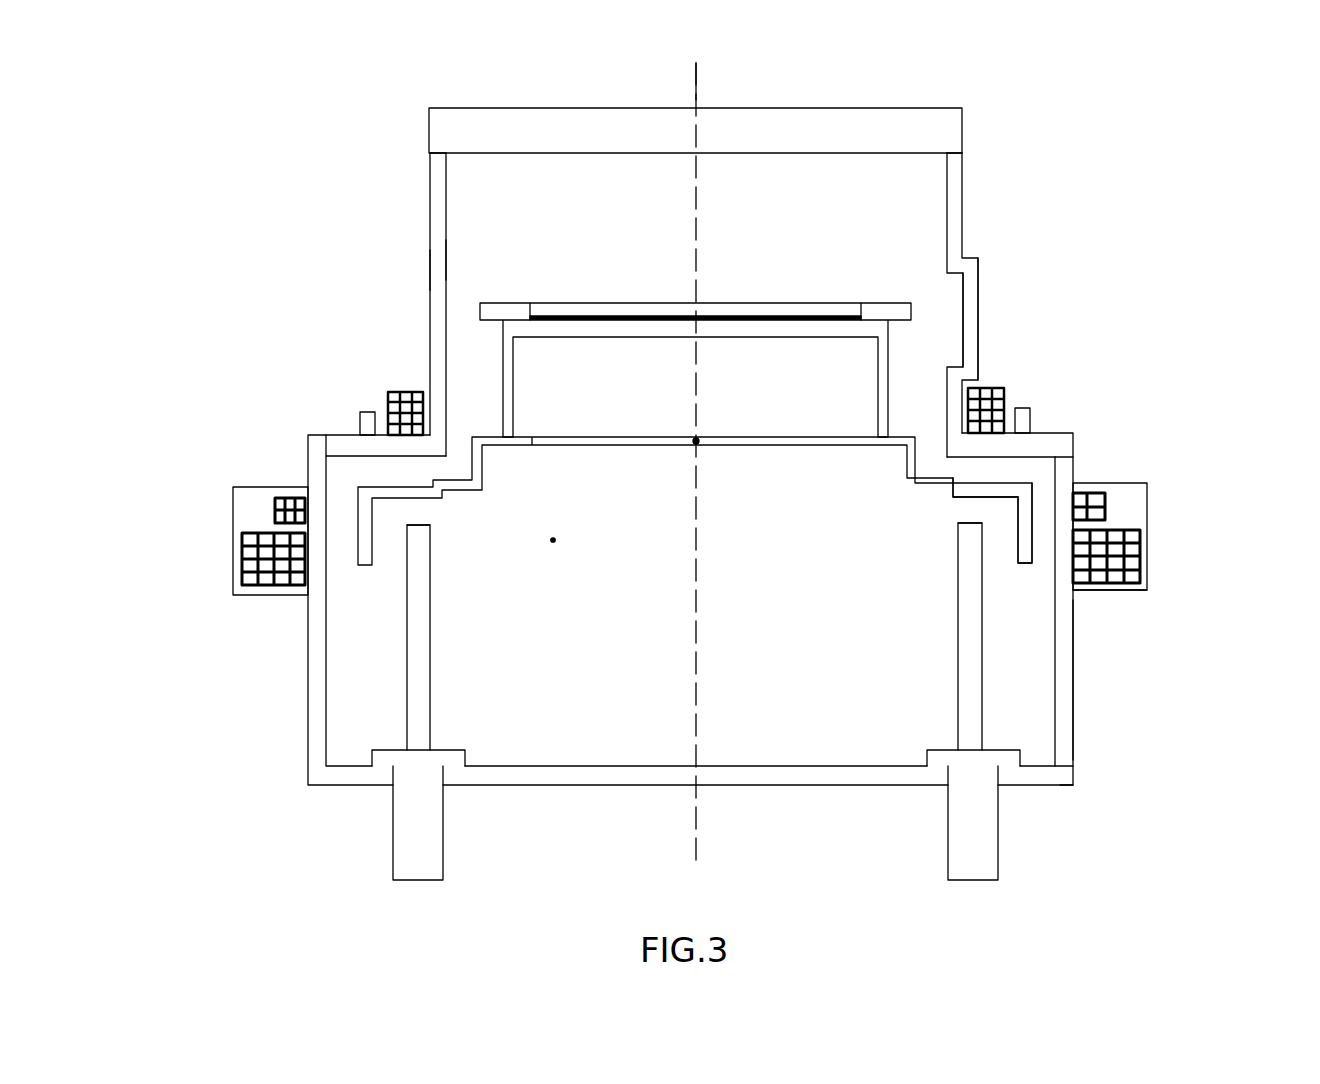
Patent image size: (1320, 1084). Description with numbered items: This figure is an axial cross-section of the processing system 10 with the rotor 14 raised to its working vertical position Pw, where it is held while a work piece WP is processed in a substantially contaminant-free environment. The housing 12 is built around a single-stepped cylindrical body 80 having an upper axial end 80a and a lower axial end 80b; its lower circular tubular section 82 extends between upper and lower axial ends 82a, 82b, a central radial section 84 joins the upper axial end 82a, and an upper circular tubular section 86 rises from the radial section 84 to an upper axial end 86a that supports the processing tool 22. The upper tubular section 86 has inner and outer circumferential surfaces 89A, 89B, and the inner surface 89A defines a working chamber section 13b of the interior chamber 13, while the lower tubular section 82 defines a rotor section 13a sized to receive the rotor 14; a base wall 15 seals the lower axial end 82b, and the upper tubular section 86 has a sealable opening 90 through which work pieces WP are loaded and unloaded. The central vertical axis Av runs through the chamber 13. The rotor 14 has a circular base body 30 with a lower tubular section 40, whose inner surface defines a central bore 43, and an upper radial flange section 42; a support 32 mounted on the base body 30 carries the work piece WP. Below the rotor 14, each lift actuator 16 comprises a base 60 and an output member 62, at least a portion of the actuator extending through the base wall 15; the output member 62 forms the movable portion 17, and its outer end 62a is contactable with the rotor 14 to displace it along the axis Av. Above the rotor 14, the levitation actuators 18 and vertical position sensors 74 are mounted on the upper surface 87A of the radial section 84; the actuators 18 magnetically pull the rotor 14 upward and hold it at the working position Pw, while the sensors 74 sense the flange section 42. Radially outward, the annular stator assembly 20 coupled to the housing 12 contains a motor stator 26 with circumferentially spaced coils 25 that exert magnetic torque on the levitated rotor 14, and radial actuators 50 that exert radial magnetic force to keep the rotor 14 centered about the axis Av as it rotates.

The processing system 10 is at (310, 194).
The housing 12 is at (1005, 192).
The interior chamber 13 is at (463, 203).
The rotor section 13a is at (762, 740).
The working chamber section 13b is at (925, 242).
The rotor 14 is at (348, 578).
The base wall 15 is at (812, 787).
The lift actuator 16 is at (370, 842).
The movable portion 17 is at (434, 648).
The levitation actuator 18 is at (386, 380).
The annular stator assembly 20 is at (1180, 557).
The processing tool 22 is at (878, 106).
The coils 25 is at (245, 560).
The motor stator 26 is at (1117, 594).
The circular base body 30 is at (358, 480).
The support 32 is at (755, 338).
The tubular section 40 is at (1022, 557).
The radial flange section 42 is at (985, 490).
The central bore 43 is at (553, 543).
The radial actuator 50 is at (285, 497).
The base 60 is at (430, 836).
The output member 62 is at (422, 692).
The outer end 62a is at (420, 516).
The vertical position sensor 74 is at (366, 410).
The cylindrical body 80 is at (965, 178).
The upper axial end 80a is at (962, 152).
The lower axial end 80b is at (1073, 783).
The lower circular tubular section 82 is at (1073, 706).
The upper axial end 82a is at (1068, 457).
The lower axial end 82b is at (1062, 762).
The central radial section 84 is at (1052, 437).
The upper circular tubular section 86 is at (427, 238).
The upper axial end 86a is at (440, 160).
The upper surface 87A is at (338, 433).
The inner circumferential surface 89A is at (447, 260).
The outer circumferential surface 89B is at (430, 268).
The sealable opening 90 is at (977, 290).
The work piece WP is at (752, 300).
The working vertical position Pw is at (700, 440).
The central vertical axis Av is at (697, 77).